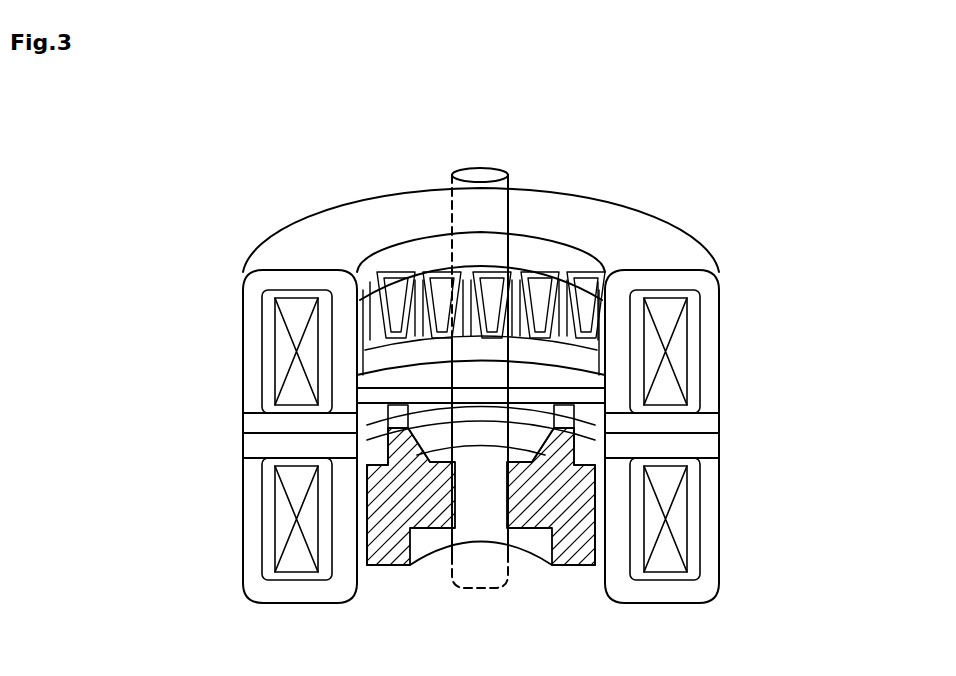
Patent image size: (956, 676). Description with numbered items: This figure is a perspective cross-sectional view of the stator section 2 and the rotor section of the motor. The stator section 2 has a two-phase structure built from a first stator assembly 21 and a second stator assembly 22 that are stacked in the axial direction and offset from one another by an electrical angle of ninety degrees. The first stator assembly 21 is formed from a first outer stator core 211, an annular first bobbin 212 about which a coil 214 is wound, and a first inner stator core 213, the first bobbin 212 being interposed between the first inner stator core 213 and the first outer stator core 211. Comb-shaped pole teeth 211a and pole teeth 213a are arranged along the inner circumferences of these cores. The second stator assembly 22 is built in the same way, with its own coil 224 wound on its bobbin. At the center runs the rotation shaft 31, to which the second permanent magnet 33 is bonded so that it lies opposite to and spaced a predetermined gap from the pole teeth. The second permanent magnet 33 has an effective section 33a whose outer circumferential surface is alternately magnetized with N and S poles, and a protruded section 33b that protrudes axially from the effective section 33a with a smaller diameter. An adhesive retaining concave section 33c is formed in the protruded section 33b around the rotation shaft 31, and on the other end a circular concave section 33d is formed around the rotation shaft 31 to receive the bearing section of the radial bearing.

The stator section 2 is at (133, 275).
The first stator assembly 21 is at (241, 307).
The second stator assembly 22 is at (241, 517).
The first outer stator core 211 is at (643, 220).
The pole teeth 211a is at (440, 268).
The first bobbin 212 is at (659, 287).
The first inner stator core 213 is at (243, 413).
The pole teeth 213a is at (535, 270).
The coil 214 is at (673, 343).
The coil 224 is at (678, 528).
The rotation shaft 31 is at (479, 164).
The second permanent magnet 33 is at (390, 570).
The effective section 33a is at (597, 495).
The protruded section 33b is at (580, 442).
The adhesive retaining concave section 33c is at (605, 412).
The circular concave section 33d is at (430, 538).